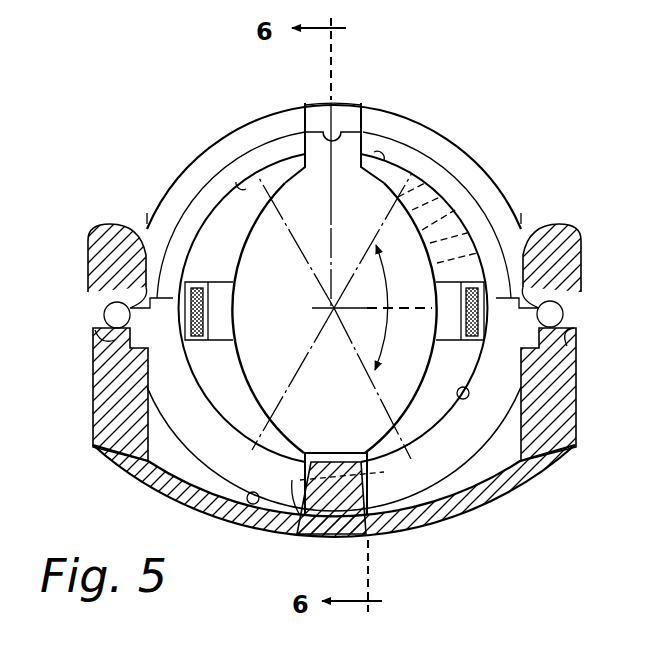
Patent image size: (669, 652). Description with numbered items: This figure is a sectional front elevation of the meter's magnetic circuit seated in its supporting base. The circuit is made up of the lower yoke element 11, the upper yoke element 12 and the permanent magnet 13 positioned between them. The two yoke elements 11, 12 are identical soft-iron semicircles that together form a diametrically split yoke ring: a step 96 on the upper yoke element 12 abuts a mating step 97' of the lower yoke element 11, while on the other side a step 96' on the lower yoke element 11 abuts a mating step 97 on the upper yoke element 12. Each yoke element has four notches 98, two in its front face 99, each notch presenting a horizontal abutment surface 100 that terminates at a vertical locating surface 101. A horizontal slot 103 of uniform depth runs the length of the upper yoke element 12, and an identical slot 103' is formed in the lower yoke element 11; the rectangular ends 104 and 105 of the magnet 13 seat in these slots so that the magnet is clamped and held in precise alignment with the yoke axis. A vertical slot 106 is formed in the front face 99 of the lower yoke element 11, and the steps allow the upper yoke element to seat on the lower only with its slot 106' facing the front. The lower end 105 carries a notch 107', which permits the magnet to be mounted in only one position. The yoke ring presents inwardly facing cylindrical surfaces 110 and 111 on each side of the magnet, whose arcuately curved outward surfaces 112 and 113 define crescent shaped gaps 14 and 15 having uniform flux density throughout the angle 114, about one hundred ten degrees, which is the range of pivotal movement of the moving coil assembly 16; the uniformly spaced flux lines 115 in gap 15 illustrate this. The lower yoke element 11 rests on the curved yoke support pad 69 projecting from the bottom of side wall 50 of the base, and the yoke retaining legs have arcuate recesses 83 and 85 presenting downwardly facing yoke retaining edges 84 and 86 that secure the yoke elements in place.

The lower yoke element 11 is at (457, 459).
The upper yoke element 12 is at (480, 187).
The permanent magnet 13 is at (277, 169).
The crescent shaped gap 14 is at (237, 403).
The crescent shaped gap 15 is at (445, 143).
The moving coil assembly 16 is at (203, 351).
The side wall 50 is at (422, 516).
The curved yoke support pad 69 is at (243, 506).
The arcuate recess 83 is at (95, 330).
The yoke retaining edge 84 is at (104, 310).
The arcuate recess 85 is at (582, 322).
The yoke retaining edge 86 is at (584, 283).
The step 96 is at (157, 173).
The step 96' is at (578, 394).
The step 97 is at (531, 249).
The step 97' is at (84, 394).
The notch 98 is at (540, 228).
The front face 99 is at (387, 523).
The abutment surface 100 is at (97, 252).
The locating surface 101 is at (146, 228).
The horizontal slot 103 is at (364, 104).
The horizontal slot 103' is at (366, 476).
The rectangular end 104 is at (380, 140).
The rectangular end 105 is at (290, 528).
The vertical slot 106 is at (336, 510).
The slot 106' is at (317, 86).
The notch 107' is at (255, 468).
The cylindrical surface 110 is at (236, 150).
The cylindrical surface 111 is at (420, 135).
The curved surface 112 is at (240, 178).
The curved surface 113 is at (463, 170).
The angle 114 is at (390, 307).
The flux lines 115 is at (466, 398).